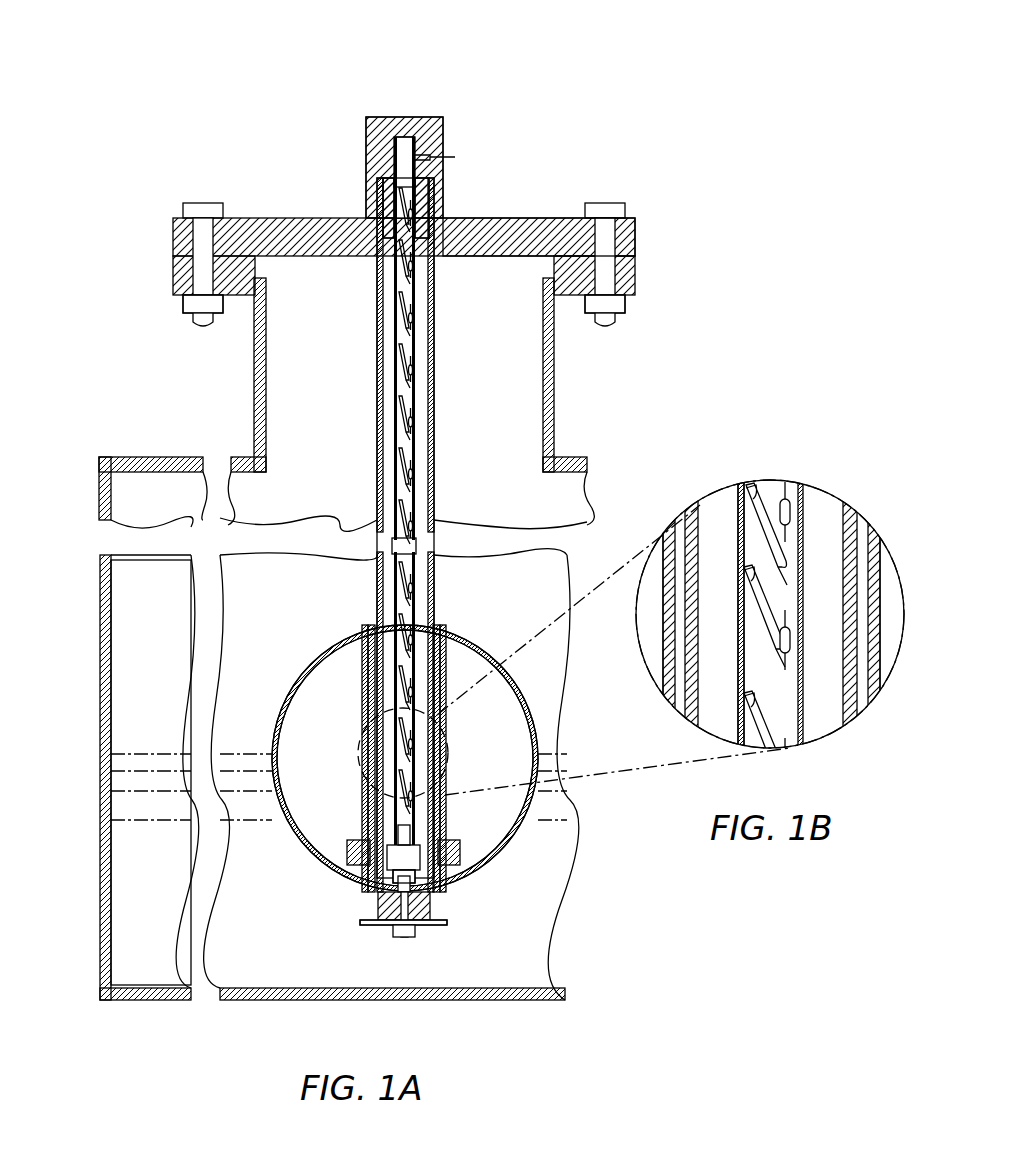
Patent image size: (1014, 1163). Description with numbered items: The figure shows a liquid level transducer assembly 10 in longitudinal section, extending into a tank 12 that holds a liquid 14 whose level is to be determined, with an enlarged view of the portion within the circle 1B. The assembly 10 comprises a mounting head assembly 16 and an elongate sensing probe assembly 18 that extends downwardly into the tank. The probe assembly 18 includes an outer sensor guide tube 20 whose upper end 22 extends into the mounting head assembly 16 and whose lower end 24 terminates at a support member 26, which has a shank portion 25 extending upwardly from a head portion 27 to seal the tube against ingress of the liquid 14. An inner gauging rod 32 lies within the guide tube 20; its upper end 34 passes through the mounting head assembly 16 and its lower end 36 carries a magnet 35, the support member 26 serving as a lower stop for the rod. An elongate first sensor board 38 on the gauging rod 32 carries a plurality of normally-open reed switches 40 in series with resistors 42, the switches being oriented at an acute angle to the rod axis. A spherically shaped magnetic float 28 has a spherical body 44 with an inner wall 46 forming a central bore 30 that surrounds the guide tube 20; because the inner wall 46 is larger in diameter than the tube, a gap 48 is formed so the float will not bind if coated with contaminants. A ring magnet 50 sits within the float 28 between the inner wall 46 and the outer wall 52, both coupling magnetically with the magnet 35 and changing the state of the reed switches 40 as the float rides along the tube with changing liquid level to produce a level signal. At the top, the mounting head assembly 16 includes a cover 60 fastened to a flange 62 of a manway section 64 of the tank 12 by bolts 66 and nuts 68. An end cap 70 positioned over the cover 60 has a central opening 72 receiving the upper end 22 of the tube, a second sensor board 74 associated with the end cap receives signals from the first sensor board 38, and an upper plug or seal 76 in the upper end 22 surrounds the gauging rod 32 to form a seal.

In FIG. 1A, the liquid level transducer assembly 10 is at (492, 88).
In FIG. 1A, the tank 12 is at (100, 700).
In FIG. 1A, the liquid 14 is at (132, 895).
In FIG. 1A, the mounting head assembly 16 is at (262, 216).
In FIG. 1A, the elongate sensing probe assembly 18 is at (436, 348).
In FIG. 1A, the outer sensor guide tube 20 is at (380, 402).
In FIG. 1B, the outer sensor guide tube 20 is at (690, 524).
In FIG. 1A, the upper end of the sensor guide tube 22 is at (432, 190).
In FIG. 1A, the lower end of the sensor guide tube 24 is at (433, 905).
In FIG. 1A, the shank portion 25 is at (378, 922).
In FIG. 1A, the support member 26 is at (428, 926).
In FIG. 1A, the head portion 27 is at (400, 936).
In FIG. 1A, the magnetic float 28 is at (470, 632).
In FIG. 1B, the magnetic float 28 is at (884, 672).
In FIG. 1A, the central bore 30 is at (436, 702).
In FIG. 1A, the inner gauging rod 32 is at (392, 365).
In FIG. 1B, the inner gauging rod 32 is at (738, 662).
In FIG. 1A, the upper end of the gauging rod 34 is at (396, 143).
In FIG. 1A, the magnet 35 is at (392, 888).
In FIG. 1A, the lower end of the gauging rod 36 is at (412, 830).
In FIG. 1A, the first sensor board 38 is at (393, 548).
In FIG. 1B, the first sensor board 38 is at (752, 548).
In FIG. 1A, the reed switches 40 is at (380, 285).
In FIG. 1B, the reed switches 40 is at (763, 490).
In FIG. 1A, the resistors 42 is at (412, 398).
In FIG. 1B, the resistors 42 is at (790, 515).
In FIG. 1A, the spherical body 44 is at (298, 680).
In FIG. 1A, the inner wall 46 is at (362, 712).
In FIG. 1B, the inner wall 46 is at (667, 612).
In FIG. 1A, the gap 48 is at (370, 692).
In FIG. 1B, the gap 48 is at (850, 524).
In FIG. 1A, the ring magnet 50 is at (386, 860).
In FIG. 1A, the outer wall 52 is at (346, 852).
In FIG. 1A, the cover 60 is at (532, 222).
In FIG. 1A, the flange 62 is at (620, 276).
In FIG. 1A, the manway section 64 is at (556, 378).
In FIG. 1A, the bolts 66 is at (203, 214).
In FIG. 1A, the nuts 68 is at (183, 312).
In FIG. 1A, the end cap 70 is at (402, 116).
In FIG. 1A, the central opening 72 is at (383, 188).
In FIG. 1A, the second sensor board 74 is at (432, 156).
In FIG. 1A, the upper plug or seal 76 is at (384, 212).
In FIG. 1A, the circle 1B is at (470, 752).